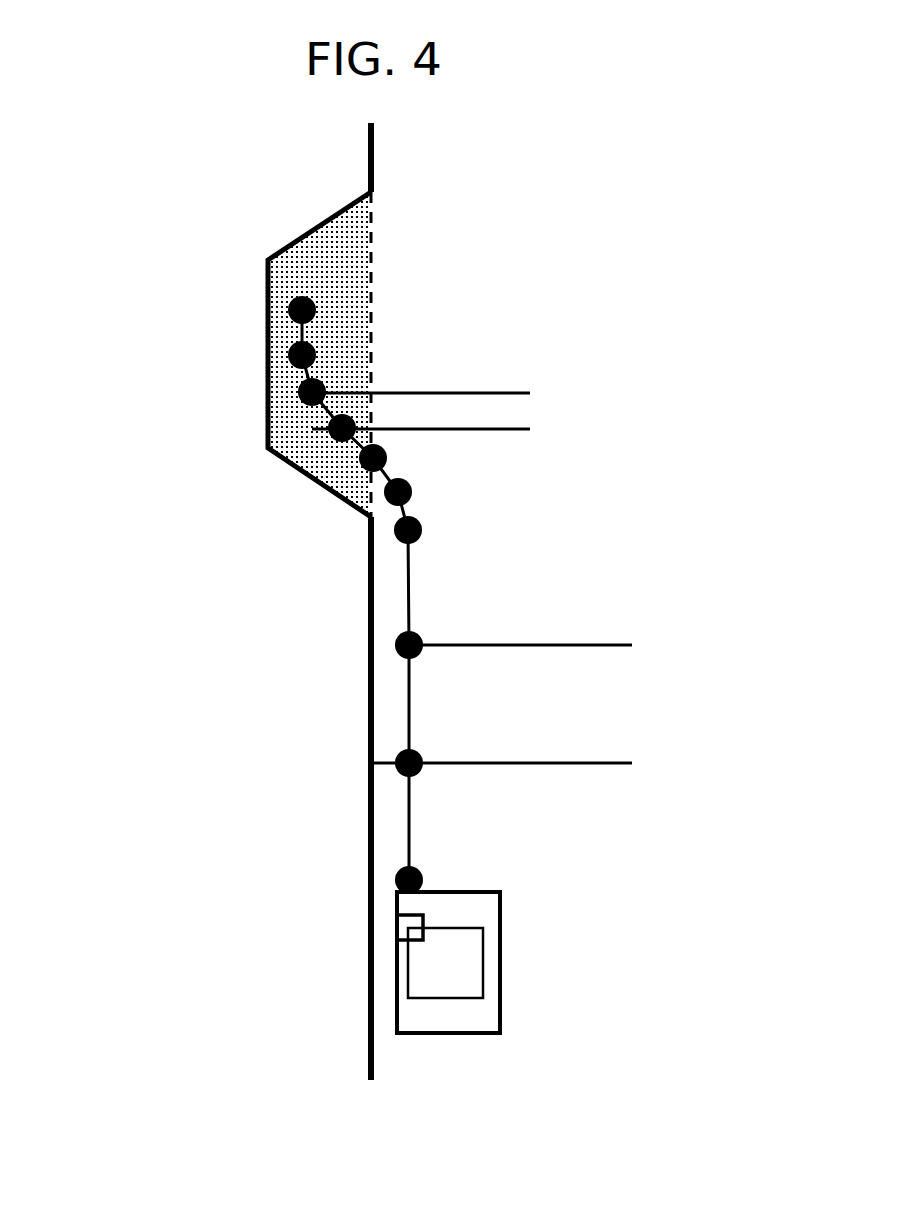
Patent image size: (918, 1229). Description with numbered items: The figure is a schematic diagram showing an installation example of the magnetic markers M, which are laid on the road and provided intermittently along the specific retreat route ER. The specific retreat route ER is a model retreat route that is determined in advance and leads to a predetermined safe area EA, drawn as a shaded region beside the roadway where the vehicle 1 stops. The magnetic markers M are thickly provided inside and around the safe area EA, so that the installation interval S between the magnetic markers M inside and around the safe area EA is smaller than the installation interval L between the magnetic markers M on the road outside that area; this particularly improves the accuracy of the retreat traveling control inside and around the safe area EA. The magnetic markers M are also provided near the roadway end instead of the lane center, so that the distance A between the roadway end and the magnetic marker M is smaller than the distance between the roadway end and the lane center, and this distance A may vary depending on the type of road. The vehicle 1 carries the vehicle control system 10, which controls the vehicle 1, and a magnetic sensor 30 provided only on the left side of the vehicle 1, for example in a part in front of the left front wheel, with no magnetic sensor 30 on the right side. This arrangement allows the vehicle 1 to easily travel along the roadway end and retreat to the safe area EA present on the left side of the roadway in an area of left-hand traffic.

The vehicle 1 is at (500, 966).
The vehicle control system 10 is at (445, 963).
The magnetic sensor 30 is at (398, 928).
The magnetic marker M is at (395, 642).
The safe area EA is at (352, 314).
The specific retreat route ER is at (409, 586).
The installation interval S is at (507, 393).
The installation interval L is at (607, 645).
The distance A is at (406, 735).